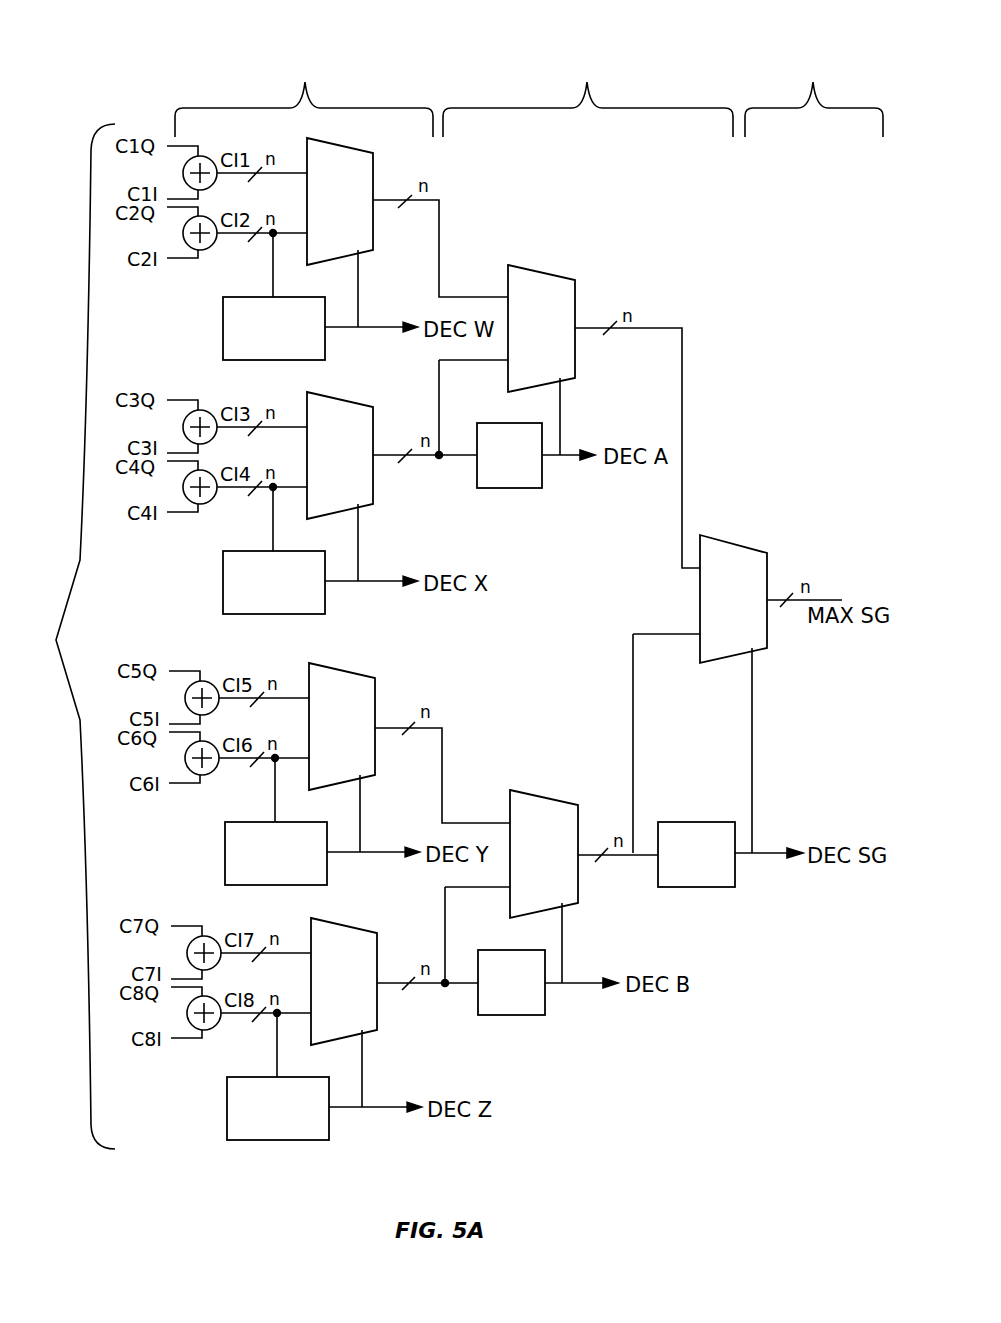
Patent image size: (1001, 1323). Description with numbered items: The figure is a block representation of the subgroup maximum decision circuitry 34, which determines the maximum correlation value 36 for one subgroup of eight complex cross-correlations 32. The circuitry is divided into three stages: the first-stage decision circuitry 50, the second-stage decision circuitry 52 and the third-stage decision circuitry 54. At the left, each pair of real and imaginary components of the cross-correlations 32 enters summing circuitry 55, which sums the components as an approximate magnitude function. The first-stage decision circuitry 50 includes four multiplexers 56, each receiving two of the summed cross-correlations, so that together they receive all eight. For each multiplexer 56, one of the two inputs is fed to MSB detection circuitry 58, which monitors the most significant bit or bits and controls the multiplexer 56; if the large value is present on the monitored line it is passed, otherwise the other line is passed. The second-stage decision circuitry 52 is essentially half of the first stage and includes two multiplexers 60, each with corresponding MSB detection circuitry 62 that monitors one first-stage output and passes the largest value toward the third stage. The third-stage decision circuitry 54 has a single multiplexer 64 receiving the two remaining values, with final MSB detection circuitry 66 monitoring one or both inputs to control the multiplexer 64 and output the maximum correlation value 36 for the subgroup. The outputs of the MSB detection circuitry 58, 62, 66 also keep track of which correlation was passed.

The complex cross-correlations 32 is at (68, 636).
The subgroup maximum decision circuitry 34 is at (806, 223).
The maximum correlation value 36 is at (821, 600).
The Stage 1 decision circuitry 50 is at (304, 73).
The Stage 2 decision circuitry 52 is at (588, 73).
The Stage 3 decision circuitry 54 is at (814, 73).
The summing circuitry 55 is at (212, 186).
The Stage 1 multiplexer 56 is at (358, 211).
The MSB detection circuitry 58 is at (250, 360).
The Stage 2 multiplexer 60 is at (560, 337).
The Stage 2 MSB detection circuitry 62 is at (528, 488).
The Stage 3 multiplexer 64 is at (750, 610).
The final MSB detection circuitry 66 is at (715, 887).